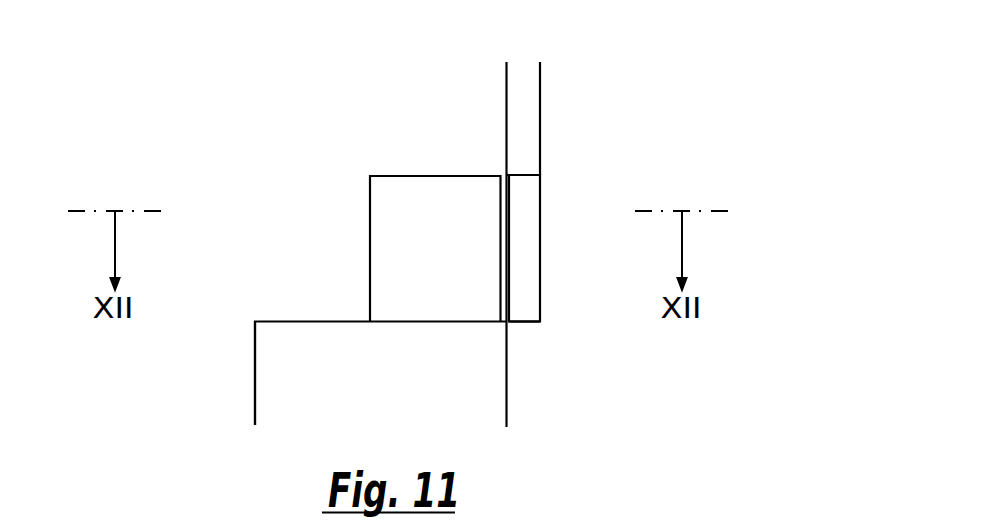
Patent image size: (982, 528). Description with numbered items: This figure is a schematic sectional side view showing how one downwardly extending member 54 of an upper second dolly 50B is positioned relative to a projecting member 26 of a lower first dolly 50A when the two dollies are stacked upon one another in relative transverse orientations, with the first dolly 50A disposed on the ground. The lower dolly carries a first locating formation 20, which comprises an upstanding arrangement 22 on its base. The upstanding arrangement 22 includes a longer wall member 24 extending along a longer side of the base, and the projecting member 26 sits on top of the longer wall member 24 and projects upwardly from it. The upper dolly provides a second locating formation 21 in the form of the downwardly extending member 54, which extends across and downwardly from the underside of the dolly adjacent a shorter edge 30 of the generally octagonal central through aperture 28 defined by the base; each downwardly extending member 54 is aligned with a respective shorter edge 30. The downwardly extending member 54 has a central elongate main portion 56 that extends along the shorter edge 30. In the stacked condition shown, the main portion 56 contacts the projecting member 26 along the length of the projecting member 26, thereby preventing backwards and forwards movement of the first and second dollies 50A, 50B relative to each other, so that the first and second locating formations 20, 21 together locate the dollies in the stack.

The first locating formation 20 is at (290, 309).
The second locating formation 21 is at (553, 240).
The upstanding arrangement 22 is at (345, 266).
The longer wall member 24 is at (285, 402).
The projecting member 26 is at (390, 222).
The through aperture 28 is at (505, 113).
The shorter edge 30 is at (505, 153).
The first dolly 50A is at (232, 415).
The second dolly 50B is at (564, 130).
The downwardly extending member 54 is at (532, 203).
The main portion 56 is at (537, 293).